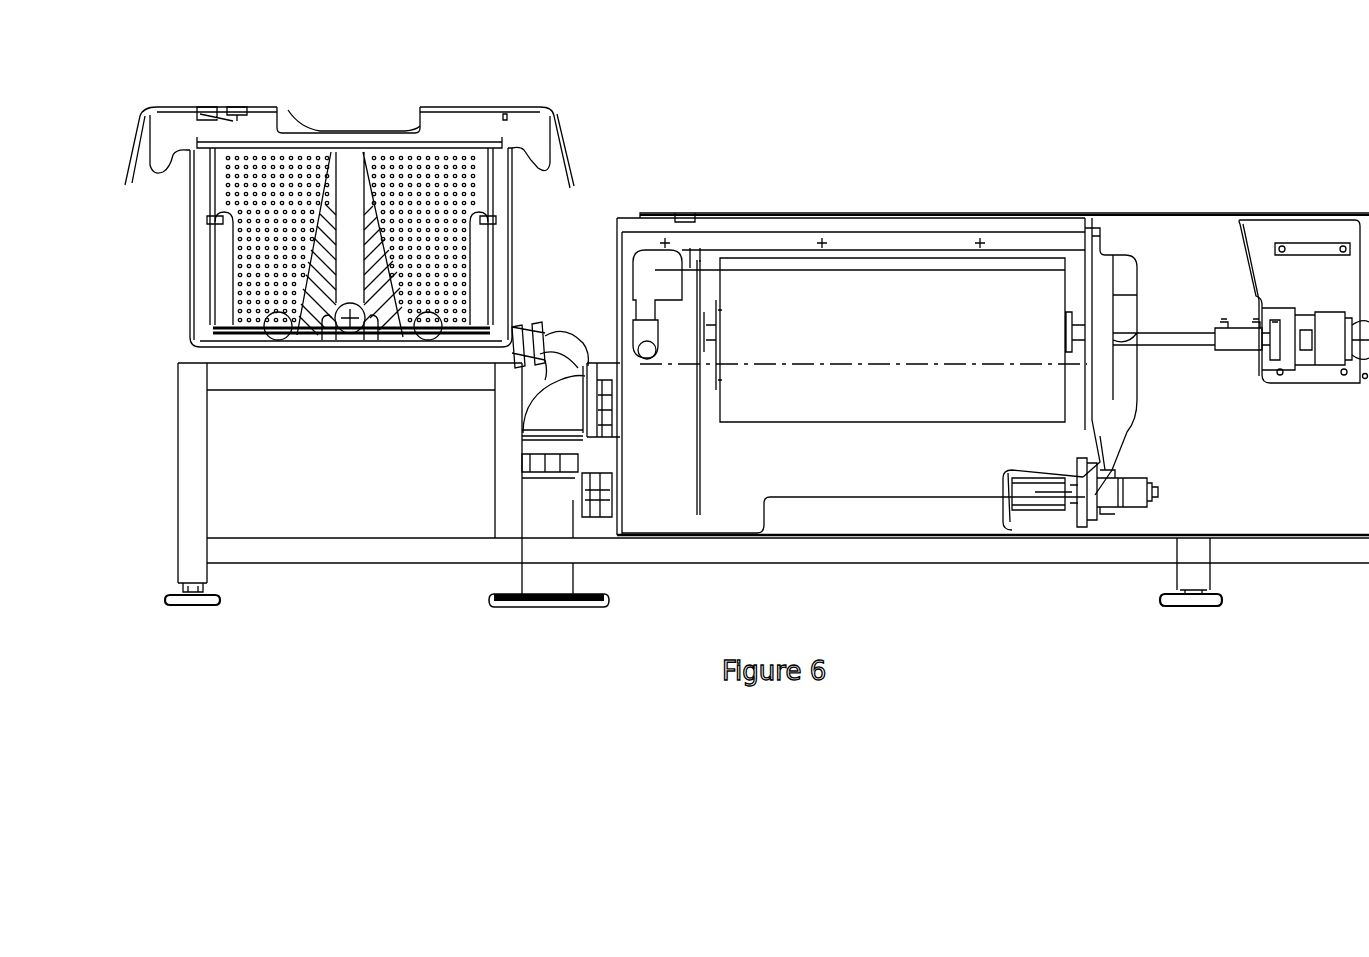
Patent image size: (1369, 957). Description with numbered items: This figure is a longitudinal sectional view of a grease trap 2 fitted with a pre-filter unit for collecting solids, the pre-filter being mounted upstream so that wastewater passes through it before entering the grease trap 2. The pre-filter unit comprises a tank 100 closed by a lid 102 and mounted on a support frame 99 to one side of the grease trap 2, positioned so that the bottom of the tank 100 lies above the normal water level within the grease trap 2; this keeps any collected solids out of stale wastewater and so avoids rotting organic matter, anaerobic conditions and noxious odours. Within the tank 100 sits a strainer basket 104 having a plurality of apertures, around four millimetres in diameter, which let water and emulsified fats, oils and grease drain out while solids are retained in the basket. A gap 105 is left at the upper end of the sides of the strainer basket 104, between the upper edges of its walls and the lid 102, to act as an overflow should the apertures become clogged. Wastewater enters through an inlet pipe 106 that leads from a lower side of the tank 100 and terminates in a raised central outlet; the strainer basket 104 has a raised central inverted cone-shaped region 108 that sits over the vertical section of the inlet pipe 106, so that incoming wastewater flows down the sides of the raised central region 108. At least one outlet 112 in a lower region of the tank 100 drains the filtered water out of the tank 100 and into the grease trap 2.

The grease trap 2 is at (1130, 215).
The support frame 99 is at (182, 452).
The tank 100 is at (190, 308).
The lid 102 is at (450, 105).
The strainer basket 104 is at (490, 196).
The gap 105 is at (500, 128).
The inlet pipe 106 is at (345, 168).
The raised central inverted cone-shaped region 108 is at (317, 240).
The outlet 112 is at (430, 340).